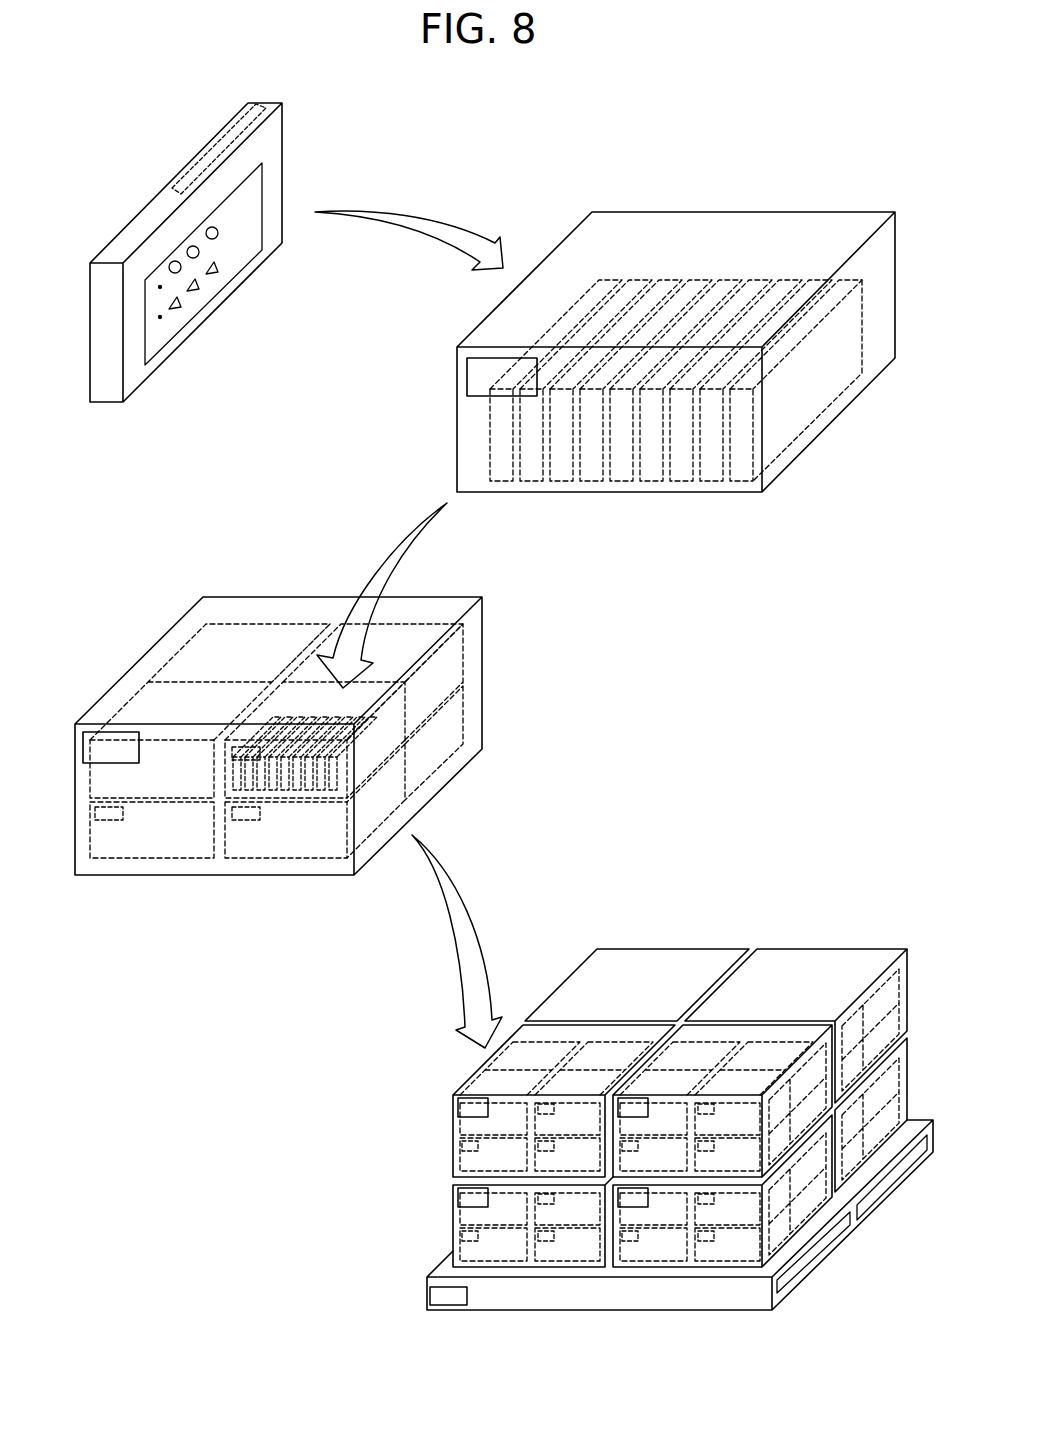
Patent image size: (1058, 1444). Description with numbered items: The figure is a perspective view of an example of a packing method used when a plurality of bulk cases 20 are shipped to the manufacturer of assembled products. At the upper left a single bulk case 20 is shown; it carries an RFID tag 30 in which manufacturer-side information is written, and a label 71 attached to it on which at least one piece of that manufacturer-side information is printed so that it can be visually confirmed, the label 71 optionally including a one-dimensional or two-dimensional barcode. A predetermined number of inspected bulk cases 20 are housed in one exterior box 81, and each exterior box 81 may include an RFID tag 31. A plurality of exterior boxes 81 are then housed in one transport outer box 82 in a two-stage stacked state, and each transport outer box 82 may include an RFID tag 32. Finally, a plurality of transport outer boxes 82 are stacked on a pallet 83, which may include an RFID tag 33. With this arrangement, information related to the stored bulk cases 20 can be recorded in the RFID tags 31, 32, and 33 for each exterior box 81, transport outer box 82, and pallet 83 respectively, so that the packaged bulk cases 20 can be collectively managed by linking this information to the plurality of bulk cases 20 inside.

The bulk case 20 is at (275, 142).
The RFID tag 30 is at (253, 112).
The label 71 is at (238, 258).
The exterior box 81 is at (670, 228).
The transport outer box 82 is at (232, 608).
The pallet 83 is at (860, 1228).
The RFID tag 31 is at (478, 377).
The RFID tag 32 is at (96, 746).
The RFID tag 33 is at (423, 1297).